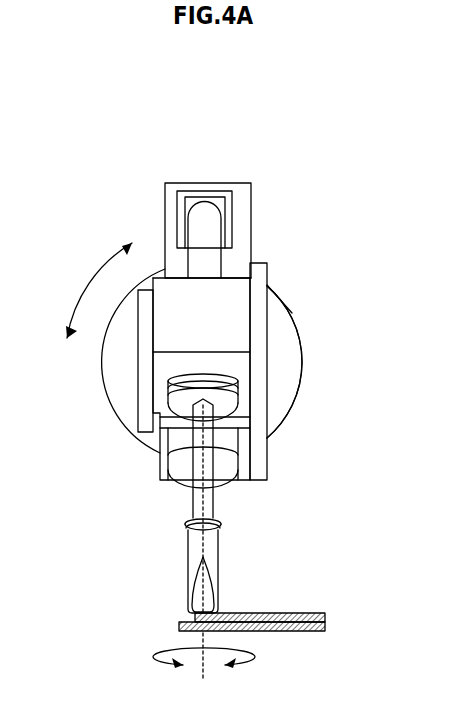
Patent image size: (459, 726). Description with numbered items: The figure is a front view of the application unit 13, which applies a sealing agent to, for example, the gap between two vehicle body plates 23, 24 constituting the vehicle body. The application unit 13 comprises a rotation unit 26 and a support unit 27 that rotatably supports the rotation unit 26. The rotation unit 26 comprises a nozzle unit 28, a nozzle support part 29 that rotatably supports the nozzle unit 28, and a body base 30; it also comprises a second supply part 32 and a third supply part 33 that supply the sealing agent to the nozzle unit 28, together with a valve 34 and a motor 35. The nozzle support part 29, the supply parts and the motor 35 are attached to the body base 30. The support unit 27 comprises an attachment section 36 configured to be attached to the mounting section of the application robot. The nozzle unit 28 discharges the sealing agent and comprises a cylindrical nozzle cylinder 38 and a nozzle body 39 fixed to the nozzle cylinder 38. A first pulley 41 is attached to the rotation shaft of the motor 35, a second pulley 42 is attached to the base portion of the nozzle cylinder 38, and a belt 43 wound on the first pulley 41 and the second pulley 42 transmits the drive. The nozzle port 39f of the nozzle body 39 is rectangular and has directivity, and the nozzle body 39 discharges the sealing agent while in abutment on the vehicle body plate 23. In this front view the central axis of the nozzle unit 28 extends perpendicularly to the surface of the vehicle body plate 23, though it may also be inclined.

The application unit 13 is at (300, 162).
The rotation unit 26 is at (243, 166).
The second supply part 32 is at (182, 183).
The valve 34 is at (218, 192).
The third supply part 33 is at (207, 231).
The body base 30 is at (265, 273).
The nozzle support part 29 is at (238, 307).
The attachment section 36 is at (290, 358).
The support unit 27 is at (307, 404).
The second pulley 42 is at (165, 413).
The belt 43 is at (162, 445).
The motor 35 is at (160, 465).
The first pulley 41 is at (187, 482).
The nozzle unit 28 is at (305, 492).
The nozzle cylinder 38 is at (207, 503).
The nozzle body 39 is at (210, 545).
The nozzle port 39f is at (180, 622).
The vehicle body plate 23 is at (252, 614).
The vehicle body plate 24 is at (294, 632).